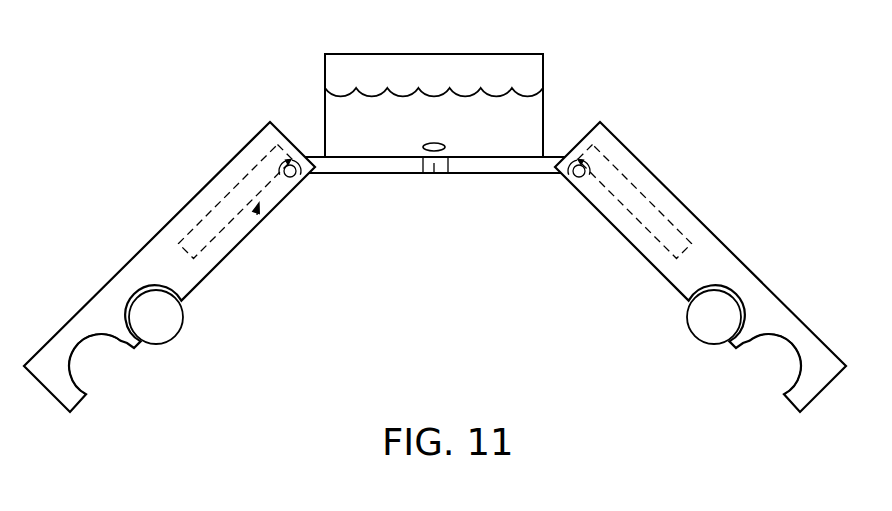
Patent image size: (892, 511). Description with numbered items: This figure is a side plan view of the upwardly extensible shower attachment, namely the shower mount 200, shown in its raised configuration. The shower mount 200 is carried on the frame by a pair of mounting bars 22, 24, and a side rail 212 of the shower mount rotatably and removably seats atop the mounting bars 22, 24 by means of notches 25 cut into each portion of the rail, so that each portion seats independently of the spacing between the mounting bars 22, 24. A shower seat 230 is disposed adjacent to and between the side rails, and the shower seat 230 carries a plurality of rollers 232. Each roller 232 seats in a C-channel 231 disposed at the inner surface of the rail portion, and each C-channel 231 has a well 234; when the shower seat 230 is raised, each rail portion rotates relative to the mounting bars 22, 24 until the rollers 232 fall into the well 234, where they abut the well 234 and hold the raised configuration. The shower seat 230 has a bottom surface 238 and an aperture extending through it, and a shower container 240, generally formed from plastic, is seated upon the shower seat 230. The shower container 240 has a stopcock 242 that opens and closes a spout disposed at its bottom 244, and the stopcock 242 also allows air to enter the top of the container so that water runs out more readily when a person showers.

The shower mount 200 is at (652, 122).
The shower container 240 is at (325, 83).
The stopcock 242 is at (436, 143).
The shower seat 230 is at (312, 155).
The C-channel 231 is at (200, 250).
The rollers 232 is at (295, 180).
The well 234 is at (297, 182).
The side rail 212 is at (257, 215).
The bottom surface 238 is at (399, 175).
The bottom 244 is at (434, 173).
The mounting bar 22 is at (186, 336).
The mounting bar 24 is at (698, 348).
The notches 25 is at (105, 362).